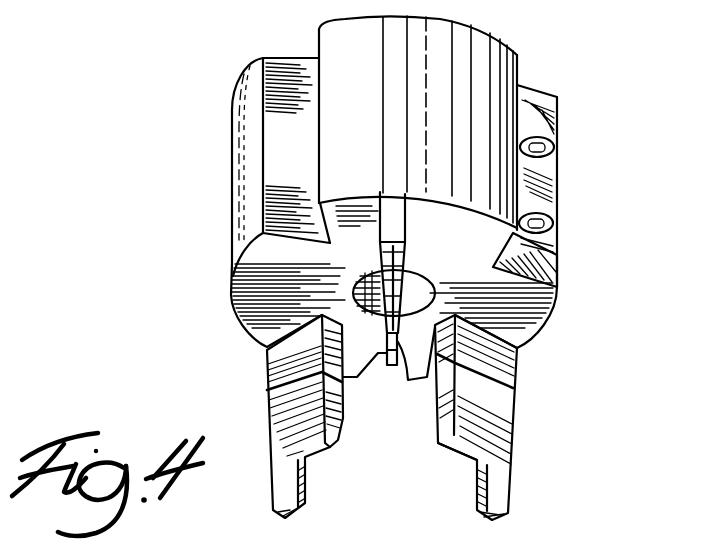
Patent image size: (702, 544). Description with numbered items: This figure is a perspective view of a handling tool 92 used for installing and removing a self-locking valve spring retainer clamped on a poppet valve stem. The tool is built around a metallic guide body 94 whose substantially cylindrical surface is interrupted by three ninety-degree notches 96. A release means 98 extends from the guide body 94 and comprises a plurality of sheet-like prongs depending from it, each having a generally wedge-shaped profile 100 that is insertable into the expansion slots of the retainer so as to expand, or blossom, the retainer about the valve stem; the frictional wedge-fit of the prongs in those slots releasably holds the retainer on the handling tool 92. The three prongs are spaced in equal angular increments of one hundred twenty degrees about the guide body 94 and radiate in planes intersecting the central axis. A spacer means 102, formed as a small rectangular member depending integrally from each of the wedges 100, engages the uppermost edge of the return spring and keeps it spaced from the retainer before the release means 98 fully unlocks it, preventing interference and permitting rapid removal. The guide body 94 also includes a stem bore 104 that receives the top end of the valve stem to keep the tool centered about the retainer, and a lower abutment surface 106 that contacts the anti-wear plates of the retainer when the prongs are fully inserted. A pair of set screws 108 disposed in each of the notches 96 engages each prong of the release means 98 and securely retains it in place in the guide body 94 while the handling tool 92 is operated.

The handling tool 92 is at (562, 91).
The guide body 94 is at (547, 323).
The notches 96 is at (292, 58).
The release means 98 is at (407, 200).
The wedge-shaped profile 100 is at (404, 251).
The spacer means 102 is at (301, 474).
The stem bore 104 is at (357, 283).
The lower abutment surface 106 is at (553, 293).
The set screws 108 is at (545, 216).